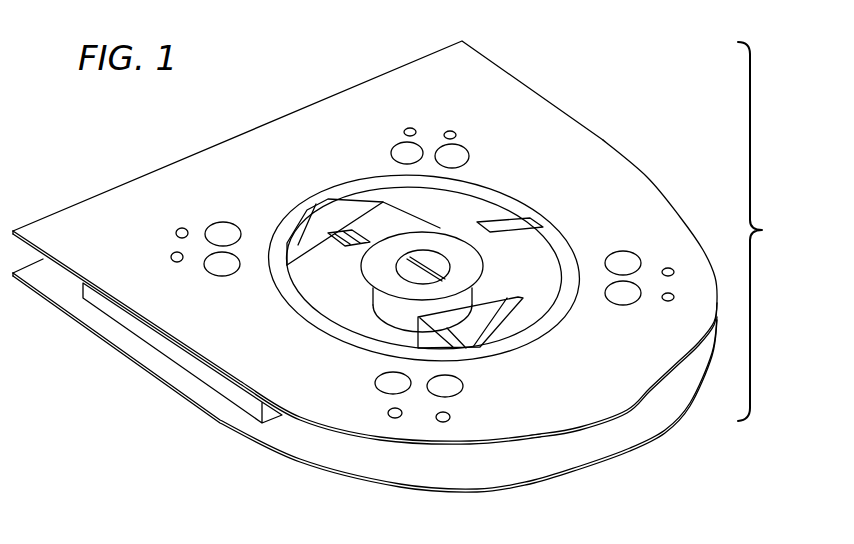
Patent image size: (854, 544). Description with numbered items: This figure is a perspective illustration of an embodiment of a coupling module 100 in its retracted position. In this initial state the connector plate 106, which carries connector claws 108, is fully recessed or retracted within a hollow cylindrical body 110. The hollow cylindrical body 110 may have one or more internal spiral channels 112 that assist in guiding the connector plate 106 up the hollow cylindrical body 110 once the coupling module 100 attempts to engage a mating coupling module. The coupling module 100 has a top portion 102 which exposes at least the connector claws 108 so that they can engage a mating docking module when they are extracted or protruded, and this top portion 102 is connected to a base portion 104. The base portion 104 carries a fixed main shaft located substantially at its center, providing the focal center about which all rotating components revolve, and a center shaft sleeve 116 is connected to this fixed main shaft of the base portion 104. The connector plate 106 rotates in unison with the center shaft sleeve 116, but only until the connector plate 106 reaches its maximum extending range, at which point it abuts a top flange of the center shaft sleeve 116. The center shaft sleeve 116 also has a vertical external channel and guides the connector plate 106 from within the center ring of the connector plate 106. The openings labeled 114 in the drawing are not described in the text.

The coupling module 100 is at (773, 231).
The top portion 102 is at (610, 400).
The base portion 104 is at (541, 471).
The connector plate 106 is at (528, 268).
The connector claws 108 is at (357, 237).
The hollow cylindrical body 110 is at (353, 203).
The internal spiral channels 112 is at (477, 223).
The mounting holes 114 is at (622, 262).
The center shaft sleeve 116 is at (383, 268).